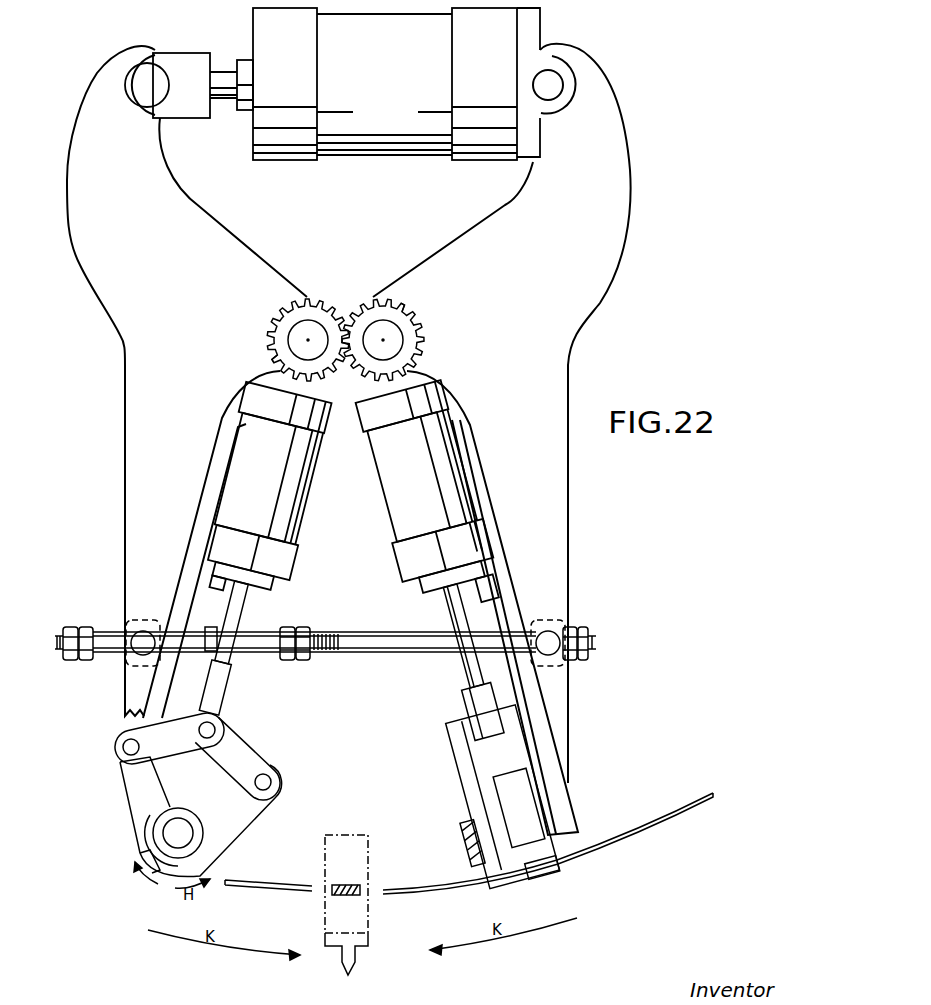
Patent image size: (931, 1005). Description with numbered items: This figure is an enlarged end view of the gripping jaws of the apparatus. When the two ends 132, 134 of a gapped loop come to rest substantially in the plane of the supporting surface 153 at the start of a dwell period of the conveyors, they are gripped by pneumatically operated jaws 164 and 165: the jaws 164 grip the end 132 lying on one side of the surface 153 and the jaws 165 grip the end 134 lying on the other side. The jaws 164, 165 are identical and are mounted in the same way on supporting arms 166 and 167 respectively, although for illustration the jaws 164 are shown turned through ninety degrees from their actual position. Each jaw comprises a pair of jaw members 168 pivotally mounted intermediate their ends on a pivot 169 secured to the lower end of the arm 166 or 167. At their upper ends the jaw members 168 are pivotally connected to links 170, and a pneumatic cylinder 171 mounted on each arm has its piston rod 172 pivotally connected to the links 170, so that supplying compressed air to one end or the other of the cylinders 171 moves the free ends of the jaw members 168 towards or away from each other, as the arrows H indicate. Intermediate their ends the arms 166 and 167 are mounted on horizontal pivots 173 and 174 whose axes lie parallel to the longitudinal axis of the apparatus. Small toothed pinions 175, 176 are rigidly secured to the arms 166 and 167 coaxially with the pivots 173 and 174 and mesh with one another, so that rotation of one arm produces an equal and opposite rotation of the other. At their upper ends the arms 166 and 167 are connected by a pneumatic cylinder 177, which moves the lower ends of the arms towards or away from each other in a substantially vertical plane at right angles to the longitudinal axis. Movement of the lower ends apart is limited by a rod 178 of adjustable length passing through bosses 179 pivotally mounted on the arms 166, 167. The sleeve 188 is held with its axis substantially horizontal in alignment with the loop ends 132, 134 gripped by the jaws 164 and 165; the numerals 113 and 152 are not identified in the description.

The arcuate guide rail 113 is at (617, 838).
The end of the gapped loop 132 is at (255, 880).
The end of the gapped loop 134 is at (403, 890).
The nozzle 152 is at (378, 946).
The supporting surface 153 is at (328, 835).
The jaws 164 is at (118, 764).
The jaws 165 is at (453, 756).
The supporting arm 166 is at (187, 382).
The supporting arm 167 is at (502, 439).
The jaw member 168 is at (533, 878).
The pivot 169 is at (190, 838).
The link 170 is at (242, 723).
The pneumatic cylinder 171 is at (350, 500).
The piston rod 172 is at (214, 674).
The horizontal pivot 173 is at (287, 338).
The horizontal pivot 174 is at (404, 345).
The toothed pinion 175 is at (272, 357).
The toothed pinion 176 is at (408, 314).
The pneumatic cylinder 177 is at (332, 84).
The rod 178 is at (405, 634).
The boss 179 is at (130, 624).
The sleeve 188 is at (340, 884).